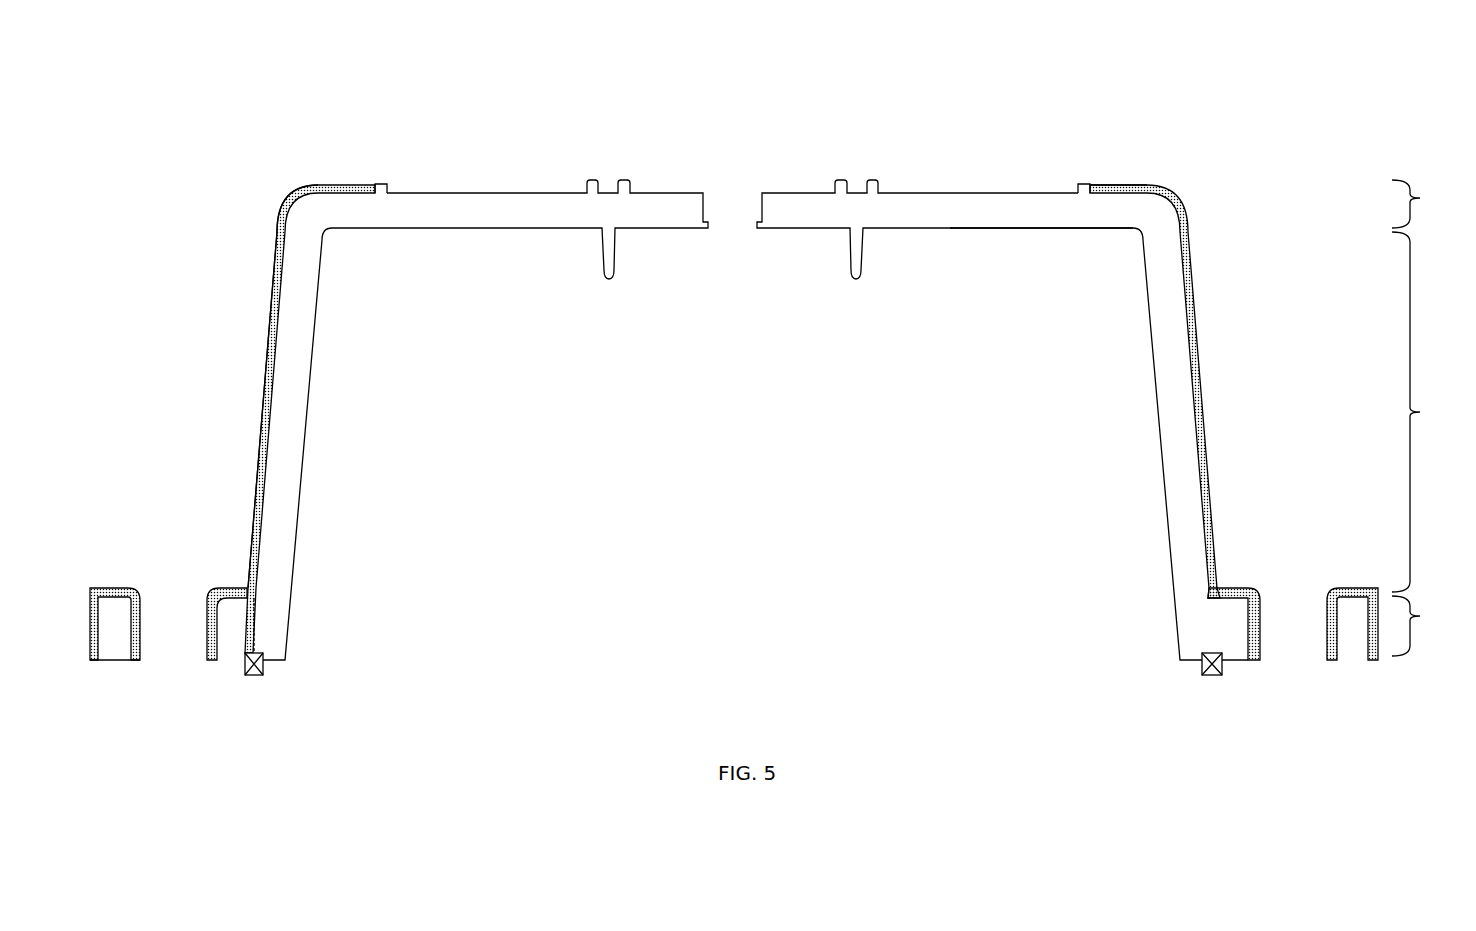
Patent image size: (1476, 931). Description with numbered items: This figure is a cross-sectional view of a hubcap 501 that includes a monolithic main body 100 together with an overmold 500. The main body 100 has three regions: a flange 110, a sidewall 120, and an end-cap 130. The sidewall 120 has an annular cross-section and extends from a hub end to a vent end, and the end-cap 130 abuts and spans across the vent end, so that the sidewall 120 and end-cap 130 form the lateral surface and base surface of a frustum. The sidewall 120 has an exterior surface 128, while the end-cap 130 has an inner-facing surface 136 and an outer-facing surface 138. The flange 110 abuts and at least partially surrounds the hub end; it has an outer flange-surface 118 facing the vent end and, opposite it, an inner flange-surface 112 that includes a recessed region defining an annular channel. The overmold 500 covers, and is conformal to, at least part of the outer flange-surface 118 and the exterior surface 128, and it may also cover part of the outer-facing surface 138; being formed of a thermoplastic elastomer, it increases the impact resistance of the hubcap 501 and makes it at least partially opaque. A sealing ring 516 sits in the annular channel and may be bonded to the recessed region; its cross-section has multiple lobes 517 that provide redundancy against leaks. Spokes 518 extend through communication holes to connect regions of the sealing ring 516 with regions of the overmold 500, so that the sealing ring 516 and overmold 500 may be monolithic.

The main body 100 is at (752, 420).
The flange 110 is at (1427, 626).
The inner flange-surface 112 is at (283, 668).
The outer flange-surface 118 is at (224, 589).
The sidewall 120 is at (1427, 412).
The exterior surface 128 is at (260, 467).
The end-cap 130 is at (1427, 204).
The inner-facing surface 136 is at (1005, 234).
The outer-facing surface 138 is at (977, 189).
The overmold 500 is at (265, 397).
The hubcap 501 is at (252, 147).
The sealing ring 516 is at (238, 665).
The lobes 517 is at (254, 679).
The spokes 518 is at (257, 622).